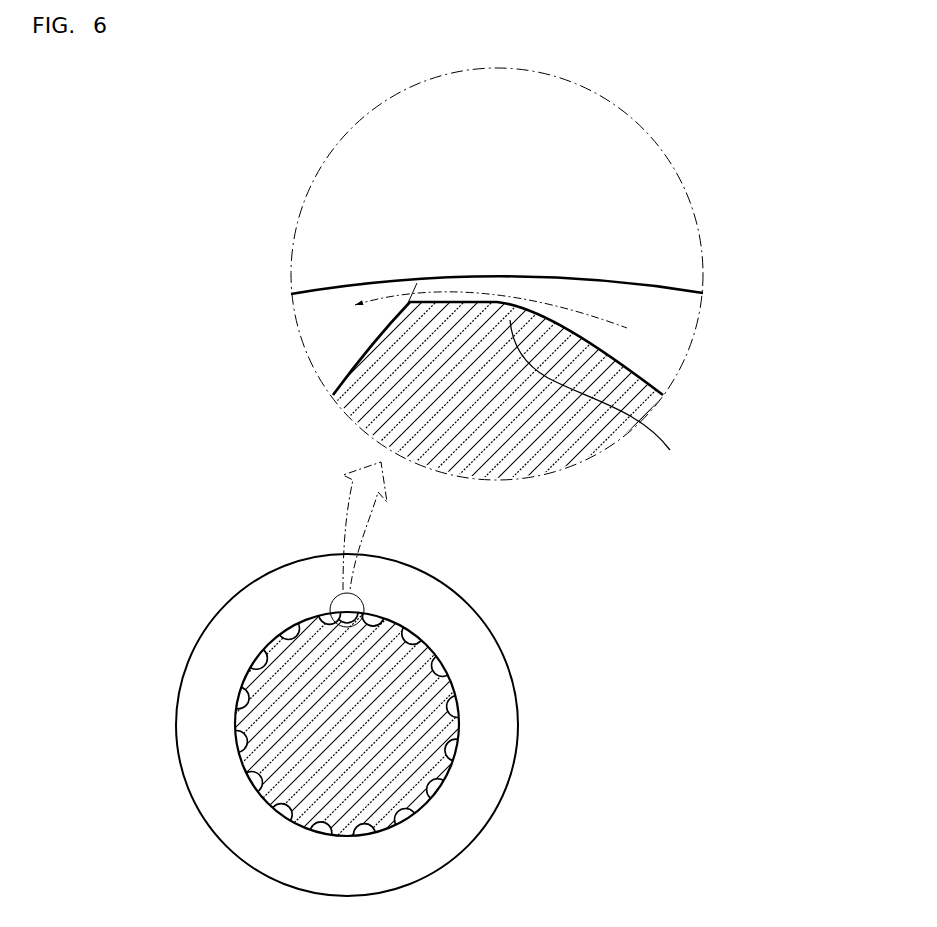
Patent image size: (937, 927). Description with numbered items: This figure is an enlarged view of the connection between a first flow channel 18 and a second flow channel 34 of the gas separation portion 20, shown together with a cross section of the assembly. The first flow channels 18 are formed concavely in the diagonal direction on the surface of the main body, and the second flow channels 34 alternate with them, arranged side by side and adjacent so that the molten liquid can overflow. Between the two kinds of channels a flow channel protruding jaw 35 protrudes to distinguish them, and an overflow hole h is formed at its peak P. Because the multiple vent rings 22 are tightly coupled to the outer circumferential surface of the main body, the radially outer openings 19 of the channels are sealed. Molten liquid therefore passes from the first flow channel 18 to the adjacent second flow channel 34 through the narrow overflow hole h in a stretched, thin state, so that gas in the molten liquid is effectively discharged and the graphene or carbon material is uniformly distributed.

The first flow channel 18 is at (678, 335).
The radially outer opening 19 is at (642, 285).
The gas separation portion 20 is at (565, 443).
The vent ring 22 is at (505, 723).
The second flow channel 34 is at (317, 332).
The flow channel protruding jaw 35 is at (605, 403).
The peak P is at (468, 302).
The overflow hole h is at (493, 290).